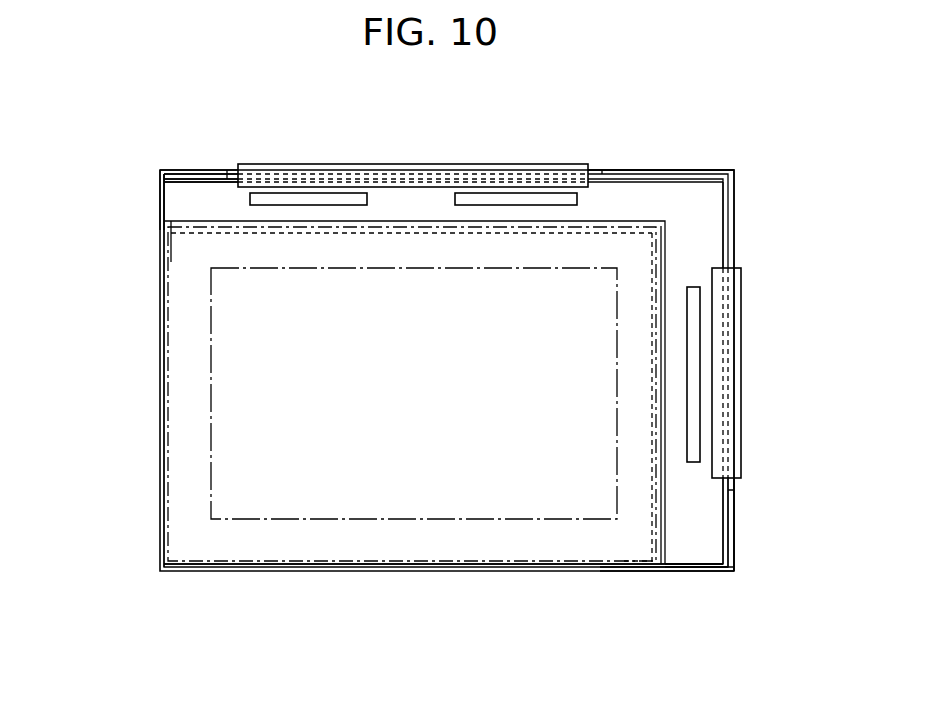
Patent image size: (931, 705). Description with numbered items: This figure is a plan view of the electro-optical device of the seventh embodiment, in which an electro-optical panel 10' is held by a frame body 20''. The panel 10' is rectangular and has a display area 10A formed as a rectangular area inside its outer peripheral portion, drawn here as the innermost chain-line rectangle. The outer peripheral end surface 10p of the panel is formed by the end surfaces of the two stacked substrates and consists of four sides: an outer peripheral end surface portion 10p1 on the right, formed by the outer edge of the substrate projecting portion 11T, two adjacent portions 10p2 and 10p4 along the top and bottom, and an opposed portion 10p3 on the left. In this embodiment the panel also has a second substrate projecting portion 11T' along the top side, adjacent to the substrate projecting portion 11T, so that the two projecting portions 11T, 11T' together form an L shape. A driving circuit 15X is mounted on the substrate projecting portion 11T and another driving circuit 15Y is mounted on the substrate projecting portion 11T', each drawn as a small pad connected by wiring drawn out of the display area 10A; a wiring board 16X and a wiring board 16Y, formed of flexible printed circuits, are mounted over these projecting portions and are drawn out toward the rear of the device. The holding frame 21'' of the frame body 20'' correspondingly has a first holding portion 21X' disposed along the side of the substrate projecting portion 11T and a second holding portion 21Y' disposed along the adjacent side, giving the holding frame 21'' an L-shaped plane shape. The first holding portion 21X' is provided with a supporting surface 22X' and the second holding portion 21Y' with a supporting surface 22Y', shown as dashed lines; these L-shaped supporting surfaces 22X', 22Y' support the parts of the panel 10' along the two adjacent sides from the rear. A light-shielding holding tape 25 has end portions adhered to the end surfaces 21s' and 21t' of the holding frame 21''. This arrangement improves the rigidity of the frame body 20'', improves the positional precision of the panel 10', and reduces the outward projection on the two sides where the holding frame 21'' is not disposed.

The electro-optical panel 10' is at (447, 339).
The display area 10A is at (515, 520).
The outer peripheral end surface 10p is at (150, 353).
The outer peripheral end surface portion 10p1 is at (723, 246).
The outer peripheral end surface portion 10p2 is at (612, 170).
The outer peripheral end surface portion 10p3 is at (164, 253).
The outer peripheral end surface portion 10p4 is at (360, 571).
The substrate projecting portion 11T is at (740, 560).
The substrate projecting portion 11T' is at (165, 146).
The driving circuit 15X is at (695, 343).
The driving circuit 15Y is at (343, 193).
The wiring board 16X is at (738, 410).
The wiring board 16Y is at (462, 164).
The frame body 20'' is at (502, 370).
The holding frame 21'' is at (486, 370).
The first holding portion 21X' is at (774, 524).
The second holding portion 21Y' is at (221, 143).
The end surface of holding frame 21s' is at (667, 604).
The end surface of holding frame 21t' is at (118, 200).
The supporting surface 22X' is at (589, 397).
The supporting surface 22Y' is at (411, 292).
The light-shielding holding tape 25 is at (160, 406).